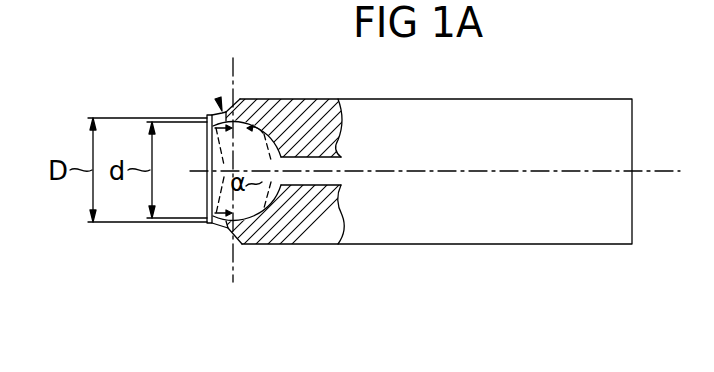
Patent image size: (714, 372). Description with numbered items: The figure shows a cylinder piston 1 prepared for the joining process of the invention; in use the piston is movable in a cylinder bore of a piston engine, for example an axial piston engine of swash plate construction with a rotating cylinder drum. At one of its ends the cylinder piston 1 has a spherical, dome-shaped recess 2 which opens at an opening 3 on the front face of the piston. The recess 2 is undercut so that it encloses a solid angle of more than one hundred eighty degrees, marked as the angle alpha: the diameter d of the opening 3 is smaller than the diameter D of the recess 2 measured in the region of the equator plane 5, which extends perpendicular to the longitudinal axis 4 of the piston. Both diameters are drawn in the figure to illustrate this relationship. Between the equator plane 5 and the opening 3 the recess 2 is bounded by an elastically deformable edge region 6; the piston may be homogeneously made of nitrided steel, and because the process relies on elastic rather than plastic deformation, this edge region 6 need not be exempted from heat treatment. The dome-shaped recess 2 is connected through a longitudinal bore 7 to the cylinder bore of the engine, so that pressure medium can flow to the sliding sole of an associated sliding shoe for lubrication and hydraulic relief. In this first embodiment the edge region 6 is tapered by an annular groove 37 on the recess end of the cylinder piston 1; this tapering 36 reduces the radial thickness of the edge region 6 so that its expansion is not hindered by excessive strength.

The cylinder piston 1 is at (546, 118).
The dome-shaped recess 2 is at (268, 110).
The opening 3 is at (207, 197).
The longitudinal axis 4 is at (525, 172).
The equator plane 5 is at (235, 272).
The edge region 6 is at (220, 112).
The longitudinal bore 7 is at (340, 168).
The tapering 36 is at (218, 97).
The annular groove 37 is at (236, 96).